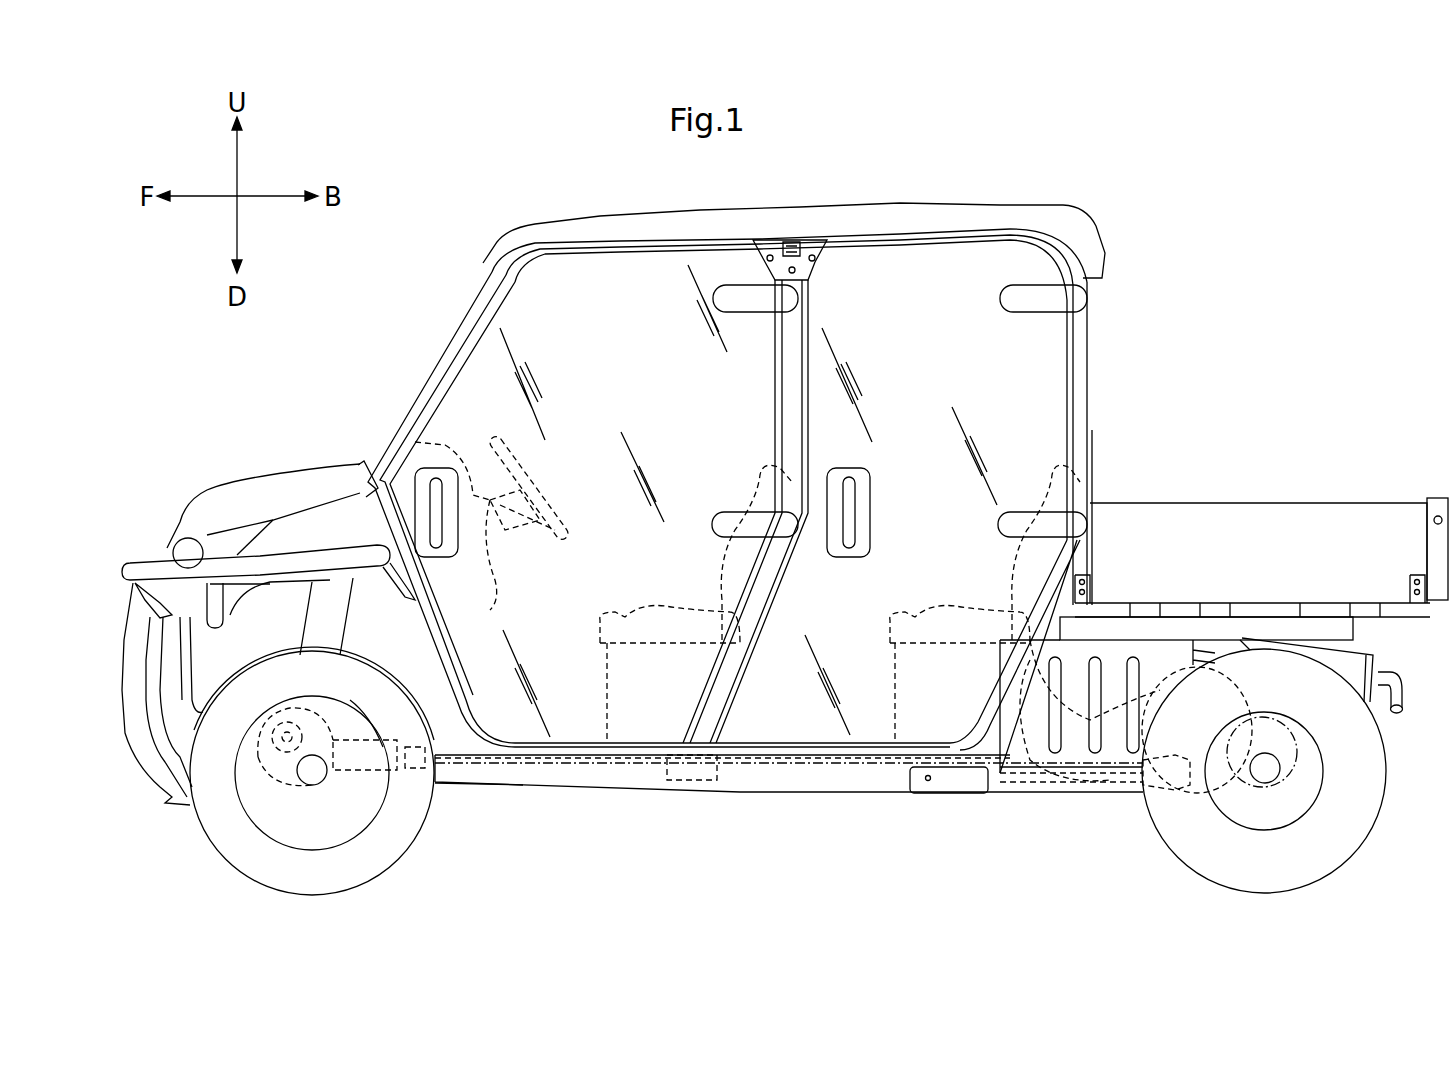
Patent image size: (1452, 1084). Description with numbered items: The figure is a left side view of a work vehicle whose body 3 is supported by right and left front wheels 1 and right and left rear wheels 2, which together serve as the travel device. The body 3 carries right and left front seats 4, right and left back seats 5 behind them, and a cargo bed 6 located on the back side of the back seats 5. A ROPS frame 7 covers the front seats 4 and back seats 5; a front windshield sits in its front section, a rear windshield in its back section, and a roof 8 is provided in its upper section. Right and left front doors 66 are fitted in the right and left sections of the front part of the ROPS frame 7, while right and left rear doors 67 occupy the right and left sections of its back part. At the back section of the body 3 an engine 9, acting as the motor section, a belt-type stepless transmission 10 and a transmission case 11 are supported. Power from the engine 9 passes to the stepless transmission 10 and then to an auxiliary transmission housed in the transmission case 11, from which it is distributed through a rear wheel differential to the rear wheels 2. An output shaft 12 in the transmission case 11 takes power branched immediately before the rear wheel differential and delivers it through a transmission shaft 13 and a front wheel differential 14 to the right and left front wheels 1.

The front wheels 1 is at (240, 852).
The rear wheels 2 is at (1337, 855).
The body 3 is at (826, 800).
The front seats 4 is at (745, 495).
The back seats 5 is at (1040, 490).
The cargo bed 6 is at (1300, 503).
The ROPS frame 7 is at (444, 343).
The roof 8 is at (803, 212).
The engine 9 is at (1085, 660).
The belt-type stepless transmission 10 is at (1018, 785).
The transmission case 11 is at (1200, 813).
The output shaft 12 is at (1157, 790).
The transmission shaft 13 is at (483, 758).
The front wheel differential 14 is at (258, 757).
The front doors 66 is at (590, 280).
The rear doors 67 is at (925, 280).